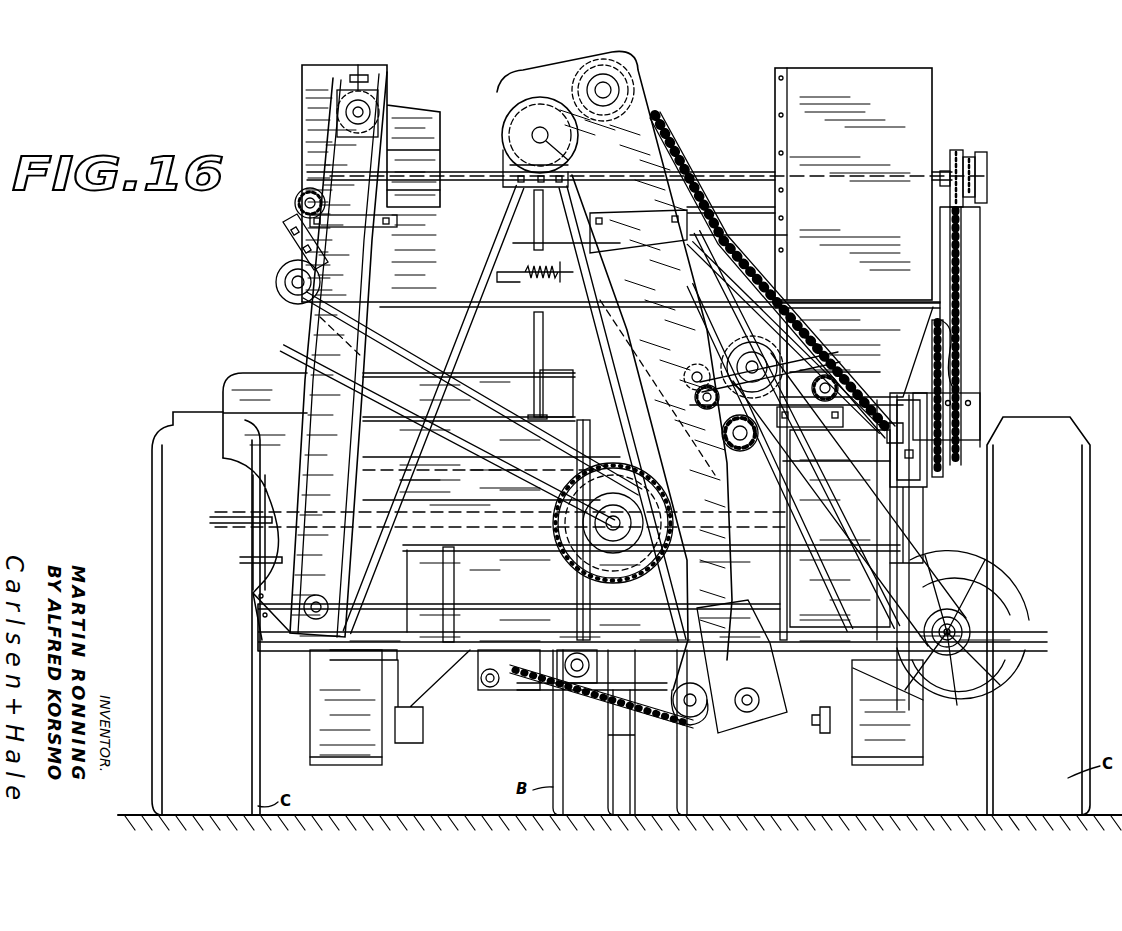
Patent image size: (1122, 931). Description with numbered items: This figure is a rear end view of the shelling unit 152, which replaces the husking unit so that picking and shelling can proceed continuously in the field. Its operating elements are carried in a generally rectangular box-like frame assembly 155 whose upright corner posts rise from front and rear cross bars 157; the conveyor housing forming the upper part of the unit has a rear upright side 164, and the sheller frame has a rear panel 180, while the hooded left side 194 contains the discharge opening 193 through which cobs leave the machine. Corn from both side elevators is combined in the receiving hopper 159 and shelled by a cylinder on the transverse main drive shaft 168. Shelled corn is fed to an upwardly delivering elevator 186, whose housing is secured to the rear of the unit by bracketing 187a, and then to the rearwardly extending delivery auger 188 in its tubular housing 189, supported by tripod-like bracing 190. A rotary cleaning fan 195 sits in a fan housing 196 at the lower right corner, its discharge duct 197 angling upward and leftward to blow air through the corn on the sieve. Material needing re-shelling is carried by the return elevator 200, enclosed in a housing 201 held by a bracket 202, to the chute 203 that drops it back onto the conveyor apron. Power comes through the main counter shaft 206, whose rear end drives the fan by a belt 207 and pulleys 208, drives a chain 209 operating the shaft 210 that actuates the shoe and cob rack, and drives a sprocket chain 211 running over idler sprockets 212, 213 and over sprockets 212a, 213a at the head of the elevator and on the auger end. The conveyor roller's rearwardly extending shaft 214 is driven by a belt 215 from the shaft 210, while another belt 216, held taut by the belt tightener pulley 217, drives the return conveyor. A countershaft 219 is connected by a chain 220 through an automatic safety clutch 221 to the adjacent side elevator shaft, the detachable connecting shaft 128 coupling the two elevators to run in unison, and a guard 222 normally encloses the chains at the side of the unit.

The connecting shaft 128 is at (725, 172).
The shelling unit 152 is at (949, 111).
The frame assembly 155 is at (522, 340).
The cross bars 157 is at (283, 647).
The receiving hopper 159 is at (895, 338).
The rear upright side of conveyor housing 164 is at (452, 276).
The main drive shaft 168 is at (928, 452).
The rear panel 180 is at (398, 502).
The elevator 186 is at (662, 143).
The bracketing 187a is at (655, 213).
The delivery auger 188 is at (535, 138).
The tubular housing 189 is at (513, 108).
The tripod-like bracing 190 is at (600, 338).
The discharge opening 193 is at (285, 457).
The hooded left side 194 is at (234, 374).
The rotary cleaning fan 195 is at (1000, 610).
The fan housing 196 is at (990, 580).
The discharge duct 197 is at (828, 586).
The return elevator 200 is at (297, 362).
The housing 201 is at (360, 338).
The bracket 202 is at (398, 221).
The chute 203 is at (400, 190).
The main counter shaft 206 is at (698, 381).
The belt 207 is at (918, 549).
The pulleys 208 is at (800, 368).
The chain 209 is at (590, 469).
The shaft 210 is at (626, 561).
The sprocket chain 211 is at (794, 312).
The idler sprocket 212 is at (705, 408).
The sprocket at head of elevator 212a is at (634, 93).
The idler sprocket 213 is at (838, 387).
The sprocket on auger end 213a is at (518, 122).
The rearwardly extending shaft 214 is at (296, 289).
The belt 215 is at (497, 405).
The belt 216 is at (292, 246).
The belt tightener pulley 217 is at (290, 202).
The countershaft 219 is at (945, 398).
The chain 220 is at (960, 152).
The automatic safety clutch 221 is at (989, 160).
The guard 222 is at (975, 310).